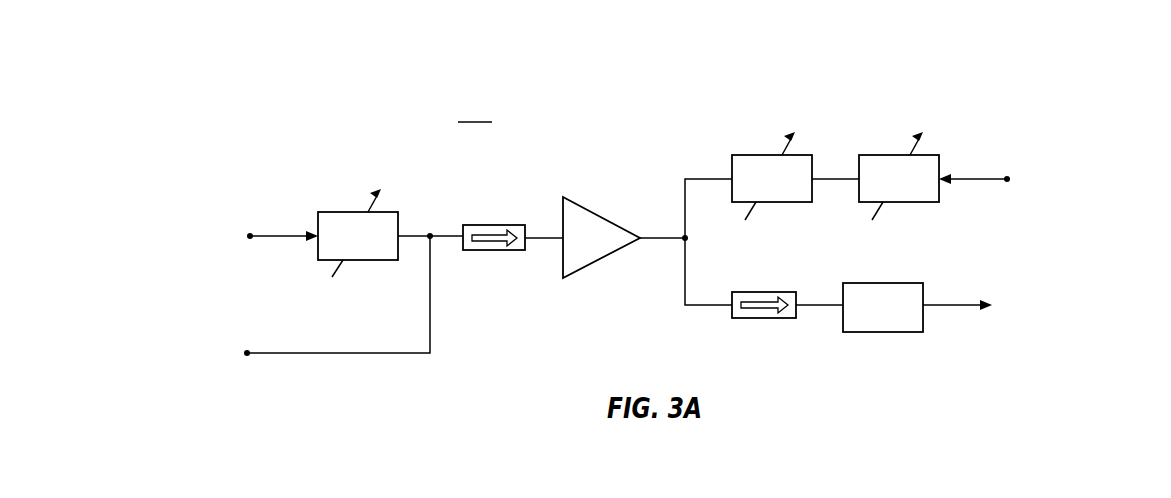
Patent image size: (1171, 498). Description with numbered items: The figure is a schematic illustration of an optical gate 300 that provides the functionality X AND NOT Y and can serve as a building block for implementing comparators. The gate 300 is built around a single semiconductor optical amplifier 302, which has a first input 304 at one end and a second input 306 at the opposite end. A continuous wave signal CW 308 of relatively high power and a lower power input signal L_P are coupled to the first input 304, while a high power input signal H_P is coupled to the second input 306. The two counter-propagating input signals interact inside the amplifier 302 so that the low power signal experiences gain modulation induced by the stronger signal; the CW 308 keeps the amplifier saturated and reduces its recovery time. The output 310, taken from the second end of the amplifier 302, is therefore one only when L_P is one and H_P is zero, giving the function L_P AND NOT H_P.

The gate 300 is at (348, 75).
The semiconductor optical amplifier 302 is at (582, 203).
The first input 304 is at (250, 235).
The second input 306 is at (1007, 177).
The continuous wave signal CW 308 is at (247, 352).
The output 310 is at (986, 310).